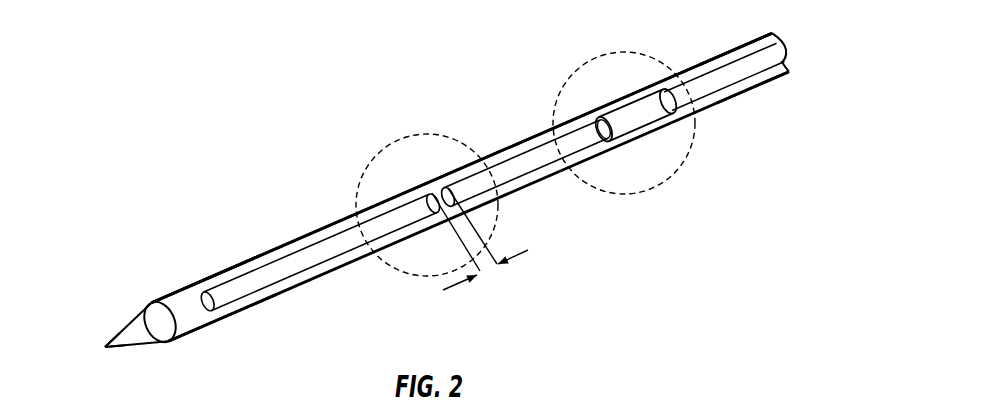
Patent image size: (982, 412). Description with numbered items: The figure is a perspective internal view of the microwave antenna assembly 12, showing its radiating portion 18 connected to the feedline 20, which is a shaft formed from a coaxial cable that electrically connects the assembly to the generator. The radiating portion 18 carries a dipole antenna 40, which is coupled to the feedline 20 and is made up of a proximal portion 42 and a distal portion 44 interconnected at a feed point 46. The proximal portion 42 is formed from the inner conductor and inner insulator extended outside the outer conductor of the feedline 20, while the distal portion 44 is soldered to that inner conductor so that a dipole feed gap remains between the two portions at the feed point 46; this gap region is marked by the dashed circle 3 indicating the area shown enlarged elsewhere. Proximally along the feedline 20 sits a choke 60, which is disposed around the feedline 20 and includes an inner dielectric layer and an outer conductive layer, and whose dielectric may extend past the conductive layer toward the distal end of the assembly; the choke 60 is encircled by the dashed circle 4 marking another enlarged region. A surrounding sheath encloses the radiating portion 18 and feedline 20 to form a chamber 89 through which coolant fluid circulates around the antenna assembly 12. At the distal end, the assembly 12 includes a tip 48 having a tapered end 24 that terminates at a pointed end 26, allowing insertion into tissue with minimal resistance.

The antenna assembly 12 is at (415, 125).
The radiating portion 18 is at (247, 233).
The feedline 20 is at (727, 38).
The tapered end 24 is at (143, 318).
The pointed end 26 is at (105, 348).
The detail view circle (FIG. 3) 3 is at (375, 158).
The detail view circle (FIG. 4) 4 is at (595, 58).
The dipole antenna 40 is at (523, 186).
The proximal portion 42 is at (545, 150).
The distal portion 44 is at (340, 242).
The feed point 46 is at (438, 198).
The tip 48 is at (128, 337).
The choke 60 is at (715, 72).
The chamber 89 is at (230, 277).